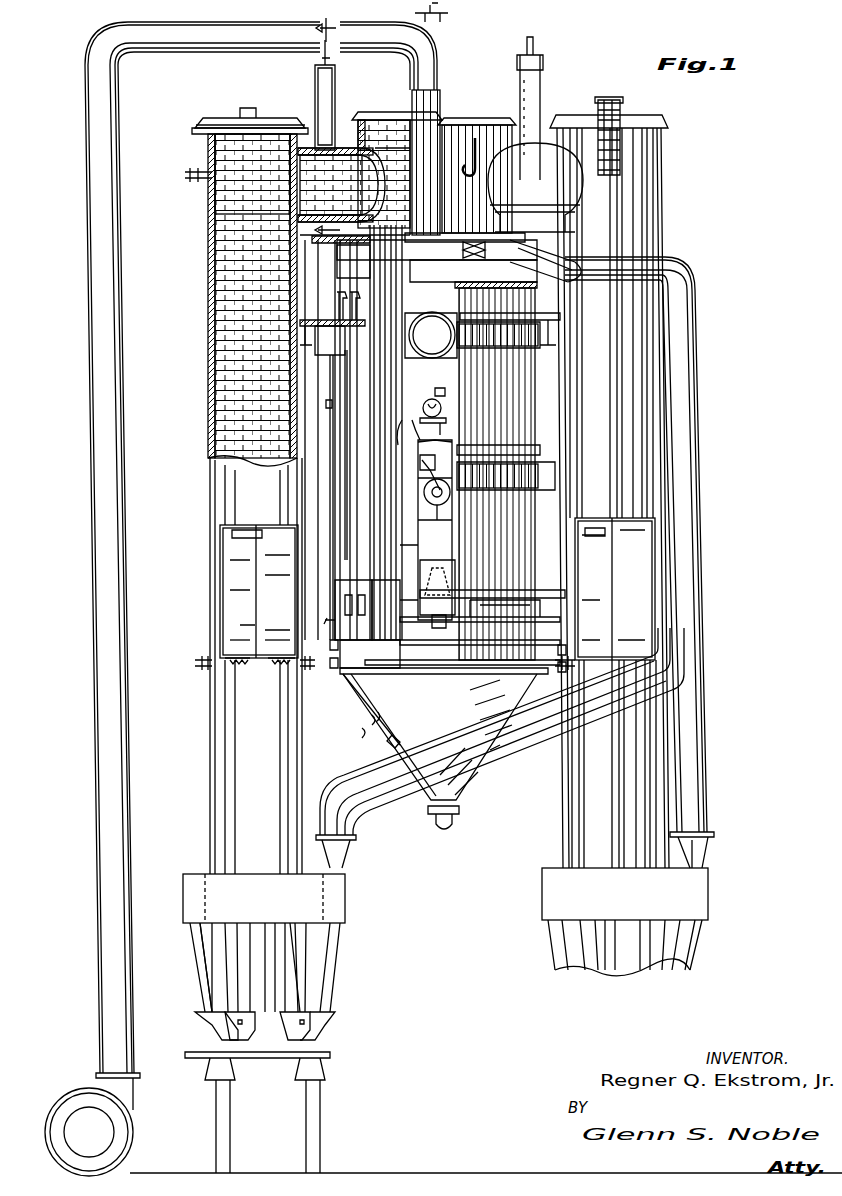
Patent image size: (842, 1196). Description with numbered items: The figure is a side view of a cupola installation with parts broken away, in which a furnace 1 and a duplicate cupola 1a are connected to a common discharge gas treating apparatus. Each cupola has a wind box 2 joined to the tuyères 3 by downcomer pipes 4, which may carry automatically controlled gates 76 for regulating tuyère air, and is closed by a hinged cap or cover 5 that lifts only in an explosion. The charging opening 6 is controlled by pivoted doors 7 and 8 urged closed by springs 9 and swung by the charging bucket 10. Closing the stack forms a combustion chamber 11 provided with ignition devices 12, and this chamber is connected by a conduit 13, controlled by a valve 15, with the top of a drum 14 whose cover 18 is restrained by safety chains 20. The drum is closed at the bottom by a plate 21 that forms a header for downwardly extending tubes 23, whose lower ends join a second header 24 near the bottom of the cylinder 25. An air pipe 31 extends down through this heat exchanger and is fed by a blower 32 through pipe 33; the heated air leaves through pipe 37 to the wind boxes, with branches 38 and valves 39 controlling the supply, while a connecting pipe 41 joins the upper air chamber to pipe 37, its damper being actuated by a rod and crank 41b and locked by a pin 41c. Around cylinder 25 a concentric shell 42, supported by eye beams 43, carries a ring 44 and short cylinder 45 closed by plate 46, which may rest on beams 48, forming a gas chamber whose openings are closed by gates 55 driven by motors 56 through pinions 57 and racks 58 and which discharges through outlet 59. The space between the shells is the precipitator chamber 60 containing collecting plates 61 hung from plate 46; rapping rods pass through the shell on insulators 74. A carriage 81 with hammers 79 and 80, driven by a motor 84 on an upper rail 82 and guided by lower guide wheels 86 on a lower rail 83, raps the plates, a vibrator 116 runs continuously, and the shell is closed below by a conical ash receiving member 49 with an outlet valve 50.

The furnace 1 is at (207, 398).
The cupola 1a is at (665, 395).
The wind box 2 is at (186, 904).
The tuyères 3 is at (205, 1026).
The downcomer pipes 4 is at (180, 1000).
The cap or cover 5 is at (272, 122).
The charging opening 6 is at (222, 577).
The door 7 is at (252, 618).
The door 8 is at (284, 618).
The springs 9 is at (240, 668).
The charging bucket 10 is at (326, 296).
The combustion chamber 11 is at (240, 210).
The lighters or ignition devices 12 is at (200, 178).
The pipe or conduit 13 is at (343, 148).
The drum 14 is at (462, 150).
The valve 15 is at (335, 92).
The cap or cover 18 is at (392, 118).
The safety chains 20 is at (478, 158).
The disc or plate 21 is at (540, 230).
The tubes 23 is at (408, 420).
The second disc or header 24 is at (405, 575).
The shell or cylinder 25 is at (385, 640).
The air pipe 31 is at (410, 146).
The fan or blower 32 is at (82, 1092).
The pipe 33 is at (100, 632).
The pipe 37 is at (598, 263).
The branches 38 is at (594, 715).
The valves 39 is at (688, 696).
The connecting pipe 41 is at (552, 254).
The rod and crank 41b is at (405, 18).
The pin 41c is at (450, 15).
The cylinder or shell 42 is at (335, 580).
The eye beams 43 is at (334, 668).
The annular plate or ring 44 is at (332, 384).
The short cylinder 45 is at (330, 355).
The plate 46 is at (540, 318).
The beams 48 is at (316, 322).
The conical ash receiving member 49 is at (462, 772).
The outlet valve 50 is at (453, 820).
The gates 55 is at (328, 410).
The motors 56 is at (446, 421).
The pinions 57 is at (440, 428).
The racks 58 is at (442, 406).
The outlet 59 is at (438, 325).
The annular electrical precipitator chamber 60 is at (348, 580).
The collecting plates 61 is at (350, 522).
The insulators 74 is at (330, 620).
The automatically controlled gates 76 is at (240, 975).
The upper hammer 79 is at (443, 462).
The hammer 80 is at (438, 628).
The car or carriage 81 is at (448, 552).
The upper rail 82 is at (555, 468).
The lower rail 83 is at (522, 594).
The motor 84 is at (440, 500).
The lower guide wheels 86 is at (420, 580).
The vibrator 116 is at (388, 742).